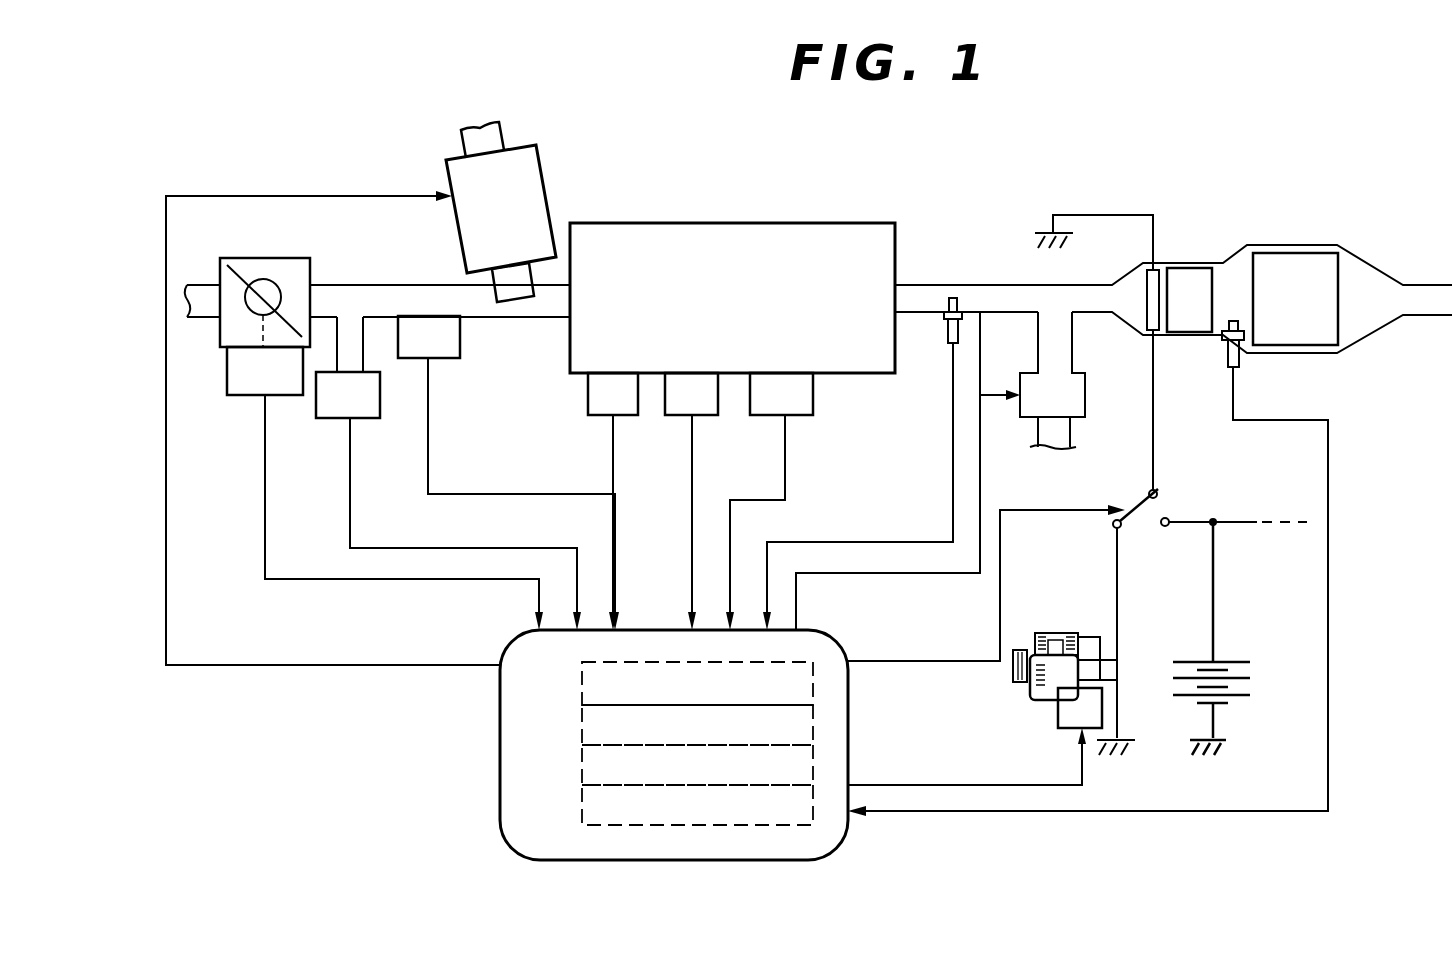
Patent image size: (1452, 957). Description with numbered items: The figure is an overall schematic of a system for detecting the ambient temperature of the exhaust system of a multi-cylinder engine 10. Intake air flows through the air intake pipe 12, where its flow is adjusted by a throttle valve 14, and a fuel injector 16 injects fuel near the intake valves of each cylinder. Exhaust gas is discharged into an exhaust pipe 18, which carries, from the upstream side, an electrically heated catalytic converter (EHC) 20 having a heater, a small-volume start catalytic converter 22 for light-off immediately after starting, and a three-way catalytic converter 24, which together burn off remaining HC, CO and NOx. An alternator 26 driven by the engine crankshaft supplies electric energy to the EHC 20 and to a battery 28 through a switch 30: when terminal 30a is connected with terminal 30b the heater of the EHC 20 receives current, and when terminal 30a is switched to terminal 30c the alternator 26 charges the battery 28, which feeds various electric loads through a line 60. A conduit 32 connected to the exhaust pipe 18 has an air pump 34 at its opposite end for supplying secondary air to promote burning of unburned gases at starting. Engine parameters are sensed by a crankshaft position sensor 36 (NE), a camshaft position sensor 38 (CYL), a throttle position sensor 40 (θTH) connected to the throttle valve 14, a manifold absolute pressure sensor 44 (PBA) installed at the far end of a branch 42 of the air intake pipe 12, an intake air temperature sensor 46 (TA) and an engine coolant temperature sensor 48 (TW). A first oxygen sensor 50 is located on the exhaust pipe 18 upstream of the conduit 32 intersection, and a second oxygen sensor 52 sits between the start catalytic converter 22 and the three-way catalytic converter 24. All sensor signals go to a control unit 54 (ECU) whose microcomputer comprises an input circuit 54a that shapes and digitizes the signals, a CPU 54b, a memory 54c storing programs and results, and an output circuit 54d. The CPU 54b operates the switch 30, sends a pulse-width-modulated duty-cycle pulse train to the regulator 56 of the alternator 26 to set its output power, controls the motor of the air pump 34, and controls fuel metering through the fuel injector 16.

The engine 10 is at (850, 223).
The air intake pipe 12 is at (395, 285).
The throttle valve 14 is at (253, 280).
The fuel injector 16 is at (550, 198).
The exhaust pipe 18 is at (982, 285).
The electrically heated catalytic converter (EHC) 20 is at (1159, 270).
The start catalytic converter 22 is at (1198, 277).
The three-way catalytic converter 24 is at (1323, 267).
The alternator 26 is at (1037, 637).
The battery 28 is at (1243, 677).
The switch 30 is at (1133, 498).
The terminal 30a is at (1112, 528).
The terminal 30b is at (1162, 493).
The terminal 30c is at (1165, 530).
The conduit 32 is at (1072, 358).
The air pump 34 is at (1028, 417).
The crankshaft position sensor 36 is at (708, 415).
The camshaft position sensor 38 is at (805, 415).
The throttle position sensor 40 is at (283, 397).
The branch 42 is at (358, 340).
The manifold absolute pressure sensor 44 is at (372, 422).
The intake air temperature sensor 46 is at (460, 345).
The engine coolant temperature sensor 48 is at (628, 415).
The first oxygen sensor 50 is at (945, 330).
The second oxygen sensor 52 is at (1240, 363).
The control unit (ECU) 54 is at (664, 735).
The input circuit 54a is at (820, 663).
The CPU 54b is at (817, 727).
The memory 54c is at (817, 770).
The output circuit 54d is at (815, 813).
The regulator 56 is at (1058, 718).
The line 60 is at (1242, 527).